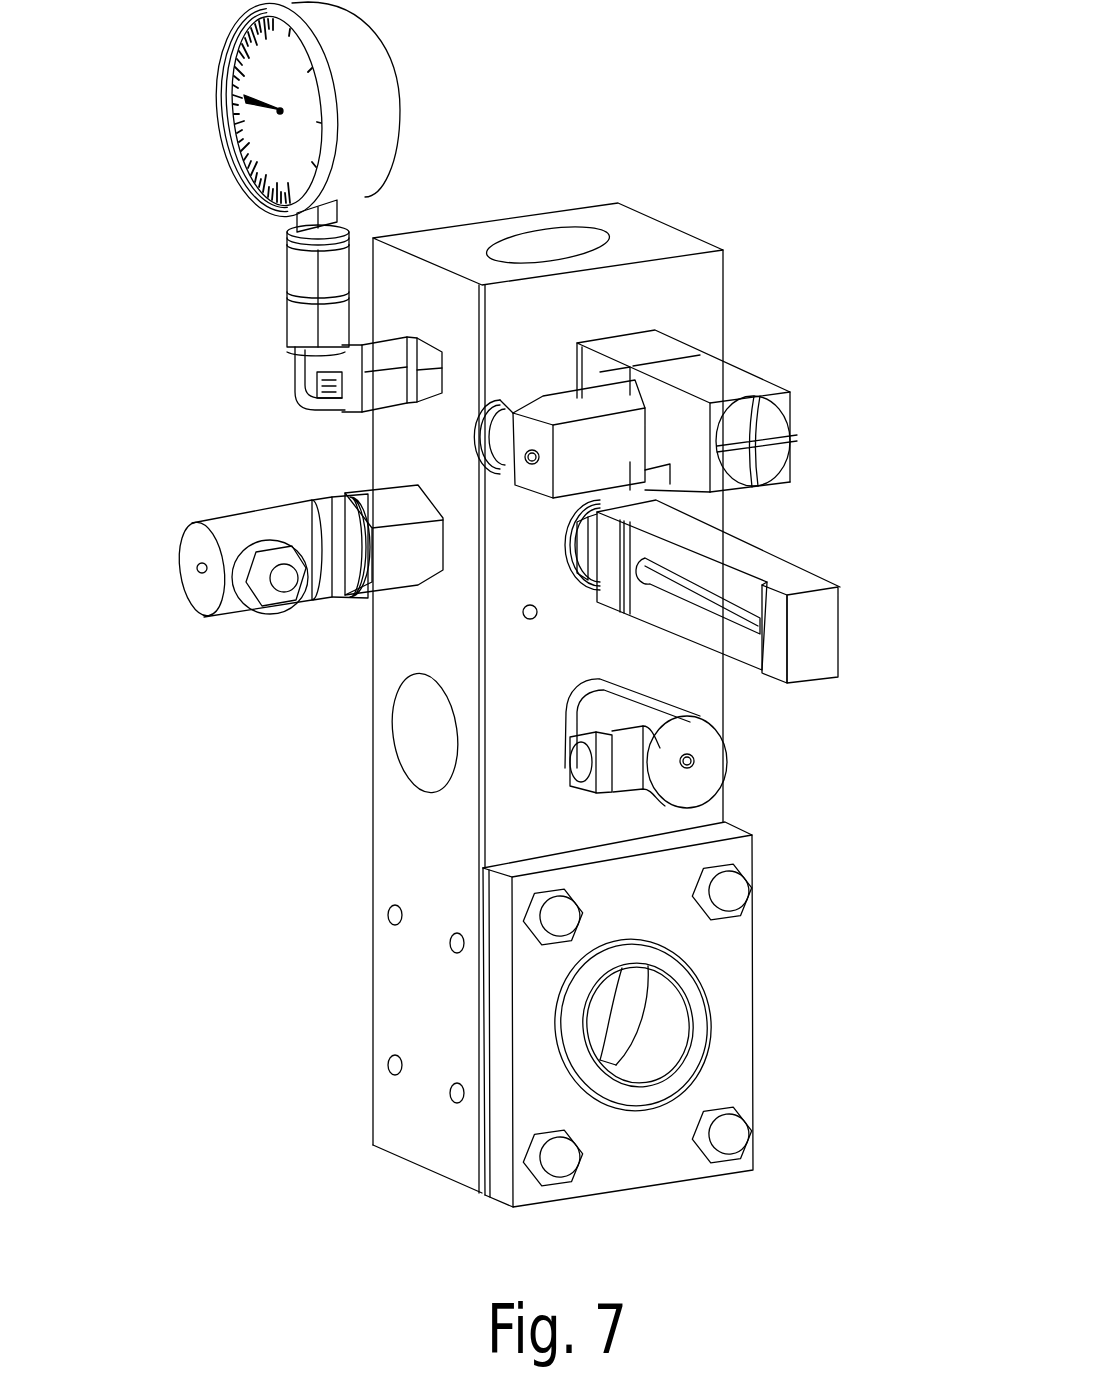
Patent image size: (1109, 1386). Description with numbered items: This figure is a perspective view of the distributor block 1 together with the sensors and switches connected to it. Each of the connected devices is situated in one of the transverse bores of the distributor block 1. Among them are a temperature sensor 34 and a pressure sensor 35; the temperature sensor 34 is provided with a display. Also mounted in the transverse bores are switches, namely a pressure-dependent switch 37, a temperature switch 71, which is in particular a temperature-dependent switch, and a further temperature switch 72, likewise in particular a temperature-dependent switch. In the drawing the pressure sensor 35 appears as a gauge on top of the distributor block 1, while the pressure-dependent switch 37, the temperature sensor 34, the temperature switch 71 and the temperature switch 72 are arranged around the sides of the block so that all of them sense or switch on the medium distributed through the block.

The hydraulic block 1 is at (730, 1077).
The temperature sensor 34 is at (823, 647).
The pressure sensor 35 is at (245, 195).
The pressure-dependent switch 37 is at (725, 382).
The temperature switch 71 is at (203, 617).
The temperature switch 72 is at (710, 752).